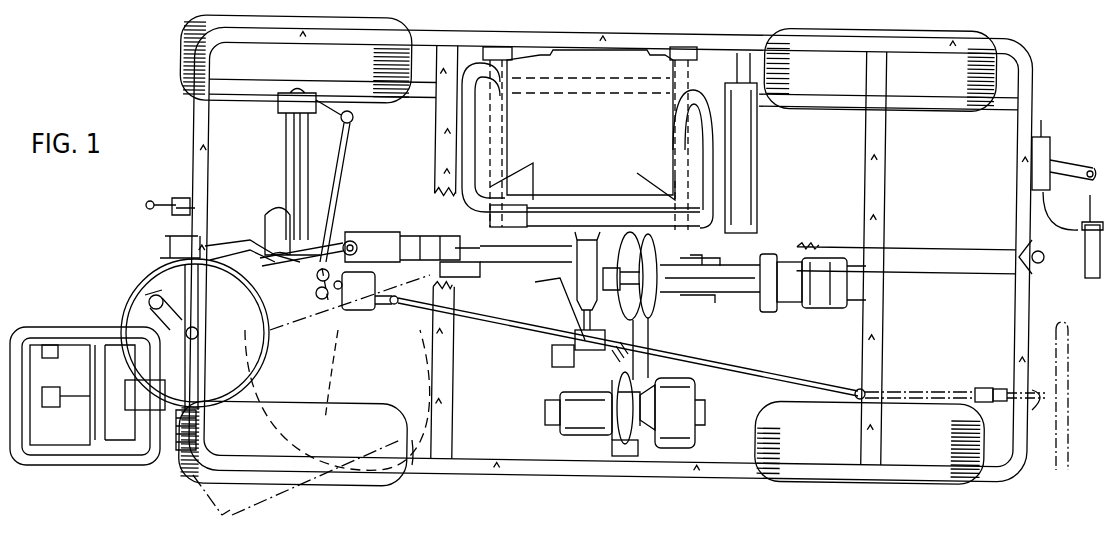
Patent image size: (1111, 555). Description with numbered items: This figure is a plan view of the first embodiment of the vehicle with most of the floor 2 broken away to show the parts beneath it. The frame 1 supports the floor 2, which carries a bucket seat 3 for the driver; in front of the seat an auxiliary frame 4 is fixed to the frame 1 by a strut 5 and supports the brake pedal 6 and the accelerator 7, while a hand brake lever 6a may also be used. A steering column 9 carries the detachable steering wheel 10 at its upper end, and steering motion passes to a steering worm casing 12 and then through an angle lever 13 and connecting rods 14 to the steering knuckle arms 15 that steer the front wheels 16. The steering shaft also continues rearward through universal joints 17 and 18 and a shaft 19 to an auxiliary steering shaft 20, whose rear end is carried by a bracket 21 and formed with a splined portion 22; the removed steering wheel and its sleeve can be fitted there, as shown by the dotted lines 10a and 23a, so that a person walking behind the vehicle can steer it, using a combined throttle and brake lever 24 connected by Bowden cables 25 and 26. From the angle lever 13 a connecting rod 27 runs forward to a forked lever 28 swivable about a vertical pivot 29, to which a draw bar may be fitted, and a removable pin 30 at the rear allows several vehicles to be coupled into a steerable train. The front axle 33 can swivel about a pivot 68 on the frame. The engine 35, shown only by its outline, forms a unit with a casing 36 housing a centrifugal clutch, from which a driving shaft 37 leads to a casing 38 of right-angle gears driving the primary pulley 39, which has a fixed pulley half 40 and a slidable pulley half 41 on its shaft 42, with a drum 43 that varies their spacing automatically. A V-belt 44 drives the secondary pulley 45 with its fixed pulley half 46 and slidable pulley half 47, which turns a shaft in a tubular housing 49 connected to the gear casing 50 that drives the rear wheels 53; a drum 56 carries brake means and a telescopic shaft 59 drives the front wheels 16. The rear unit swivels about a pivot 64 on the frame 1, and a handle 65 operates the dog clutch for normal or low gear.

The frame 1 is at (462, 466).
The floor 2 is at (414, 467).
The bucket seat 3 is at (325, 448).
The auxiliary frame 4 is at (65, 456).
The strut 5 is at (142, 455).
The brake pedal 6 is at (52, 390).
The hand brake lever 6a is at (220, 262).
The accelerator 7 is at (50, 345).
The steering column 9 is at (150, 314).
The steering wheel 10 is at (143, 292).
The steering wheel in alternate position 10a is at (1062, 477).
The steering worm casing 12 is at (370, 290).
The angle lever 13 is at (360, 240).
The connecting rods 14 is at (340, 178).
The steering knuckle arms 15 is at (352, 112).
The front wheels 16 is at (183, 62).
The universal joint 17 is at (398, 298).
The universal joint 18 is at (855, 390).
The shaft 19 is at (755, 365).
The auxiliary steering shaft 20 is at (913, 393).
The bracket 21 is at (979, 389).
The splined portion 22 is at (1002, 389).
The sleeve in alternate position 23a is at (1042, 404).
The combined throttle and brake lever 24 is at (1085, 264).
The Bowden cable 25 is at (1060, 165).
The Bowden cable 26 is at (1066, 232).
The connecting rod 27 is at (290, 235).
The forked lever 28 is at (170, 258).
The vertical pivot 29 is at (200, 242).
The removable pin 30 is at (1042, 262).
The front axle 33 is at (294, 160).
The engine 35 is at (574, 137).
The casing 36 is at (560, 225).
The driving shaft 37 is at (591, 320).
The casing 38 is at (556, 392).
The primary pulley 39 is at (597, 346).
The fixed pulley half 40 is at (628, 456).
The slidable pulley half 41 is at (647, 443).
The shaft 42 is at (660, 440).
The drum 43 is at (690, 432).
The V-belt 44 is at (690, 360).
The secondary pulley 45 is at (652, 330).
The fixed pulley half 46 is at (650, 308).
The slidable pulley half 47 is at (636, 320).
The tubular housing 49 is at (736, 275).
The gear casing 50 is at (812, 306).
The rear wheels 53 is at (938, 98).
The drum 56 is at (768, 256).
The telescopic shaft 59 is at (518, 260).
The pivot 64 is at (695, 240).
The handle 65 is at (172, 230).
The pivot 68 is at (455, 266).